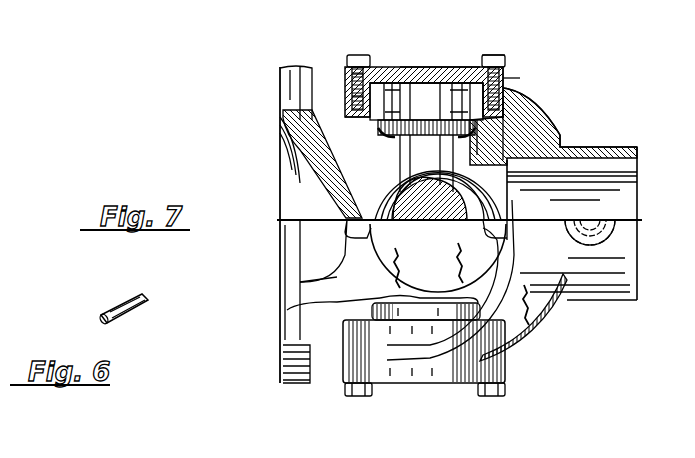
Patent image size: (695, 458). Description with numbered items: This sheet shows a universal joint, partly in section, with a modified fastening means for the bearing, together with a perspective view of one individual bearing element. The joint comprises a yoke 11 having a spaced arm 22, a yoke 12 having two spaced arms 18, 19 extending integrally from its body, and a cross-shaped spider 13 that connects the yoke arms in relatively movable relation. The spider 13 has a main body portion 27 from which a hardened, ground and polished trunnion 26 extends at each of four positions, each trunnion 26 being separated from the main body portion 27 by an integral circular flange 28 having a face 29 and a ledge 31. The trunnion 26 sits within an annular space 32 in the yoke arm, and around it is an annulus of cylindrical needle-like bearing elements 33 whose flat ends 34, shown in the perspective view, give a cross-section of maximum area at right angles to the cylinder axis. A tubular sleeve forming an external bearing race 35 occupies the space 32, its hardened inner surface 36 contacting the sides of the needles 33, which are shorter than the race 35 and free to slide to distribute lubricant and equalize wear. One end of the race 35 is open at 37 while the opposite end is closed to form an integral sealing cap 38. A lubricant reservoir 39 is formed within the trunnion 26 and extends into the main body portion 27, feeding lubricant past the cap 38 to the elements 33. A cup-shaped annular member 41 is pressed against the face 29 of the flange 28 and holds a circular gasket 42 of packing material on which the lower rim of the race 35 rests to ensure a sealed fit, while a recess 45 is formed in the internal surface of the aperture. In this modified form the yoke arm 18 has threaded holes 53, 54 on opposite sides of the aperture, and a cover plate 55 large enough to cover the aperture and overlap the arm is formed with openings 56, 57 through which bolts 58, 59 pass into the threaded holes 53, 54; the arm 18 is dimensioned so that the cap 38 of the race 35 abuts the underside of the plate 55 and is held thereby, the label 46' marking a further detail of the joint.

In FIG. 7, the yoke 11 is at (303, 67).
In FIG. 7, the yoke 12 is at (540, 110).
In FIG. 7, the spider 13 is at (433, 170).
In FIG. 7, the yoke arm 18 is at (553, 122).
In FIG. 7, the yoke arm 19 is at (500, 345).
In FIG. 7, the yoke arm 22 is at (313, 292).
In FIG. 7, the trunnion 26 is at (472, 73).
In FIG. 7, the main body portion 27 is at (445, 187).
In FIG. 7, the circular flange 28 is at (460, 193).
In FIG. 7, the face 29 is at (480, 178).
In FIG. 7, the ledge 31 is at (375, 128).
In FIG. 7, the annular space 32 is at (352, 75).
In FIG. 7, the bearing elements 33 is at (352, 96).
In FIG. 6, the bearing elements 33 is at (140, 308).
In FIG. 6, the flat ends 34 is at (101, 318).
In FIG. 7, the external bearing race 35 is at (503, 90).
In FIG. 7, the inner surface 36 is at (507, 78).
In FIG. 7, the open end 37 is at (558, 135).
In FIG. 7, the sealing cap 38 is at (410, 72).
In FIG. 7, the lubricant reservoir 39 is at (426, 101).
In FIG. 7, the annular member 41 is at (387, 152).
In FIG. 7, the gasket 42 is at (387, 145).
In FIG. 7, the recess 45 is at (380, 127).
In FIG. 7, the cap 46' is at (426, 45).
In FIG. 7, the threaded hole 53 is at (503, 108).
In FIG. 7, the threaded hole 54 is at (356, 112).
In FIG. 7, the cover plate 55 is at (445, 67).
In FIG. 7, the opening 56 is at (505, 68).
In FIG. 7, the opening 57 is at (372, 68).
In FIG. 7, the bolt 58 is at (493, 56).
In FIG. 7, the bolt 59 is at (358, 55).